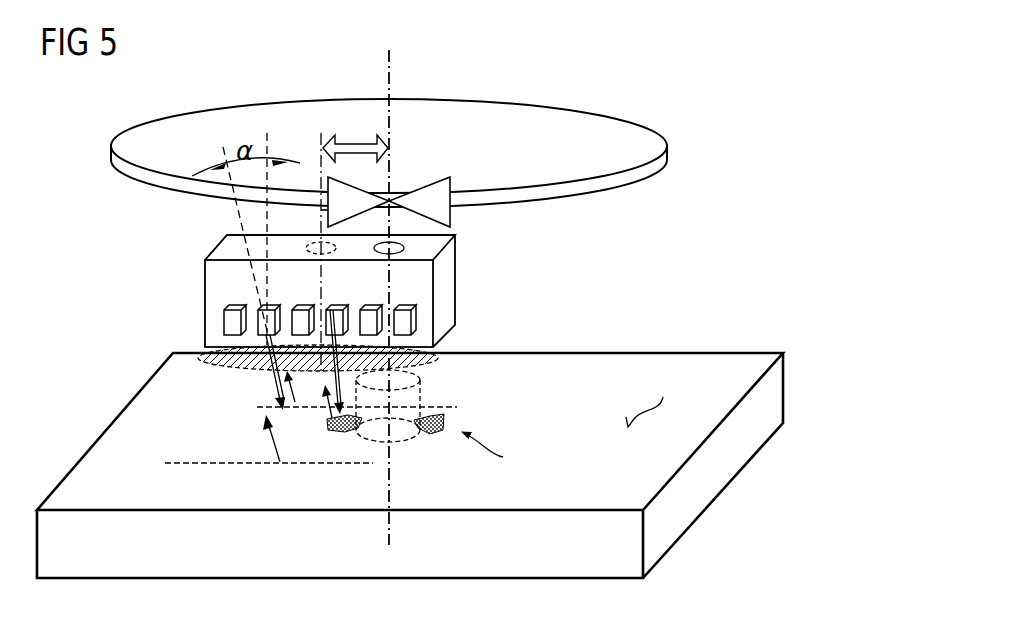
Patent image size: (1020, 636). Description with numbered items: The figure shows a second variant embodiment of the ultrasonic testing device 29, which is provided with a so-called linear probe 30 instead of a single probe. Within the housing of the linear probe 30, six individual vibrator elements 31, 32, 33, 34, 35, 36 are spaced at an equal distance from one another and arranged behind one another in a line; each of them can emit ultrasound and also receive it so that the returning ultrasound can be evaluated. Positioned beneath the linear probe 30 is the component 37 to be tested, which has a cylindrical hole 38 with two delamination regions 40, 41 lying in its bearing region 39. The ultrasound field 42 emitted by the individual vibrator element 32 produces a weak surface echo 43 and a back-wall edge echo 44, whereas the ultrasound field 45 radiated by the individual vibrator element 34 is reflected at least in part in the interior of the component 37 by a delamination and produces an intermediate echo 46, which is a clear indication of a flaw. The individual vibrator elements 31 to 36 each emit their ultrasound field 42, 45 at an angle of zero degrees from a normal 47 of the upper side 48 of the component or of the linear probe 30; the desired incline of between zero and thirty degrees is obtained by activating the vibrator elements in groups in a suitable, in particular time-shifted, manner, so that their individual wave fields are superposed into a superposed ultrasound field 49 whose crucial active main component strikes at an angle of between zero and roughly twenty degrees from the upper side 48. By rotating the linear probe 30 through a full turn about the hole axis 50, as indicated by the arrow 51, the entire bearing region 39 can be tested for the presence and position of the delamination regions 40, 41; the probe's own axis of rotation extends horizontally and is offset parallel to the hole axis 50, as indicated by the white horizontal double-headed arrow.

The device 29 is at (628, 107).
The linear probe 30 is at (230, 250).
The individual vibrator element 31 is at (228, 308).
The individual vibrator element 32 is at (262, 308).
The individual vibrator element 33 is at (298, 308).
The individual vibrator element 34 is at (333, 308).
The individual vibrator element 35 is at (366, 308).
The individual vibrator element 36 is at (402, 308).
The component 37 is at (729, 471).
The cylindrical hole 38 is at (422, 398).
The bearing region 39 is at (499, 450).
The delamination region 40 is at (344, 433).
The delamination region 41 is at (423, 434).
The ultrasound field 42 is at (275, 379).
The surface echo 43 is at (295, 403).
The back-wall edge echo 44 is at (273, 446).
The ultrasound field 45 is at (340, 391).
The intermediate echo 46 is at (323, 420).
The normal 47 is at (269, 129).
The upper side 48 is at (652, 398).
The superposed ultrasound field 49 is at (436, 364).
The hole axis 50 is at (389, 66).
The arrow 51 is at (231, 112).